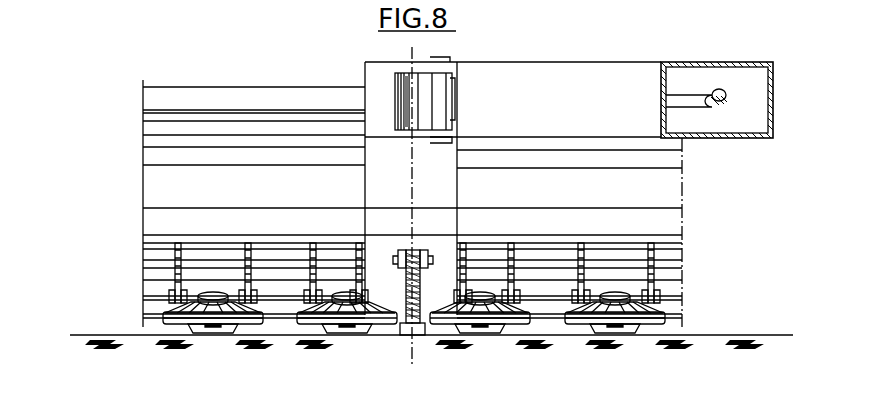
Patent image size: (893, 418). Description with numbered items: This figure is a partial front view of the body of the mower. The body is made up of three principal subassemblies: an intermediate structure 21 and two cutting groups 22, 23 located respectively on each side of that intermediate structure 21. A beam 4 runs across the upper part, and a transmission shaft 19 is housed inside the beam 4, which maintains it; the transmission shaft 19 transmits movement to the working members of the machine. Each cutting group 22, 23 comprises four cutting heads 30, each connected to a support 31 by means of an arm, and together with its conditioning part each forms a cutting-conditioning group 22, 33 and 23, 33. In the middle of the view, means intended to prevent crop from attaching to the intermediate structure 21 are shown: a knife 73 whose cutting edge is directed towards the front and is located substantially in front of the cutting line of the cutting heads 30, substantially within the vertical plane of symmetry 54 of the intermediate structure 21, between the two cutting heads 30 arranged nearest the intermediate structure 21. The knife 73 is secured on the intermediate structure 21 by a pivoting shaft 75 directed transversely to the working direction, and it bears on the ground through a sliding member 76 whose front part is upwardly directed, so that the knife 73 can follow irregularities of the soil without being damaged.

The beam 4 is at (612, 80).
The transmission shaft 19 is at (694, 100).
The intermediate structure 21 is at (372, 80).
The cutting group 22 is at (205, 142).
The cutting group 23 is at (638, 185).
The cutting heads 30 is at (295, 312).
The support 31 is at (157, 262).
The conditioning group 33 is at (412, 263).
The vertical plane of symmetry 54 is at (412, 50).
The knife 73 is at (407, 291).
The pivoting shaft 75 is at (431, 256).
The sliding member 76 is at (407, 332).